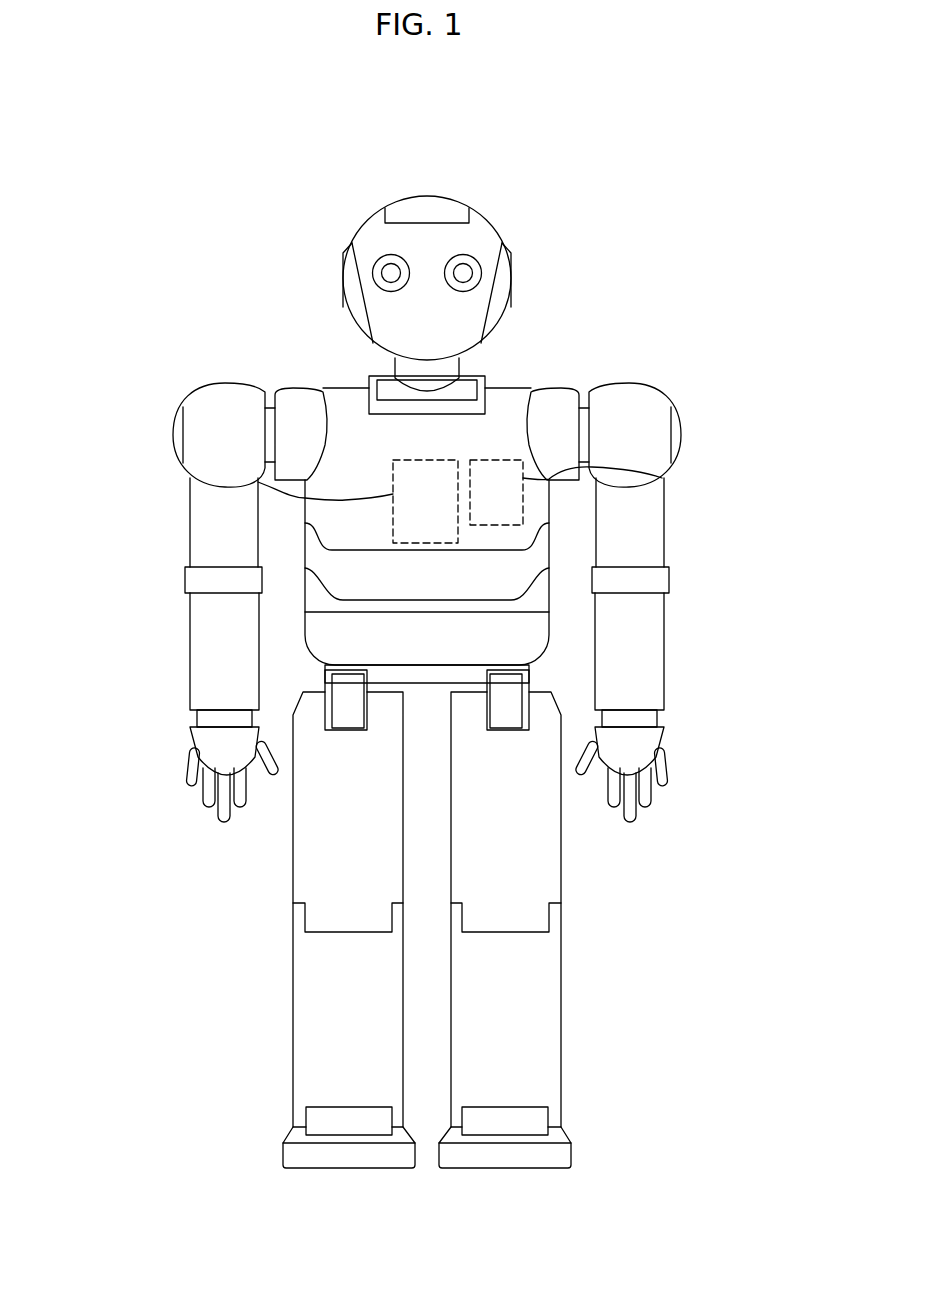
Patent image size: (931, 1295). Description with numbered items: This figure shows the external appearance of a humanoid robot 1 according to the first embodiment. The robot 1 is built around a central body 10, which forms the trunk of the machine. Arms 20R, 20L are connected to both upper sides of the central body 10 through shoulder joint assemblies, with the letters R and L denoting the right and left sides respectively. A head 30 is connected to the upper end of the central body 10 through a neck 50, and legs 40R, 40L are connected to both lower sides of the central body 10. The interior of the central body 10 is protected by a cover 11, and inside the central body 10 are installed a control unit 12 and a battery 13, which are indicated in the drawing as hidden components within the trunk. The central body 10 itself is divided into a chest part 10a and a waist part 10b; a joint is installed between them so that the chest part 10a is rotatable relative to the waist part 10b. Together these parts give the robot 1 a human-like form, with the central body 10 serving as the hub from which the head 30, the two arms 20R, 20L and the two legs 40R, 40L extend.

The humanoid robot 1 is at (657, 210).
The central body 10 is at (750, 547).
The chest part 10a is at (560, 548).
The waist part 10b is at (560, 630).
The cover 11 is at (548, 502).
The control unit 12 is at (188, 478).
The battery 13 is at (676, 457).
The right arm 20R is at (145, 571).
The left arm 20L is at (707, 650).
The head 30 is at (490, 207).
The right leg 40R is at (220, 893).
The left leg 40L is at (635, 893).
The neck 50 is at (490, 360).